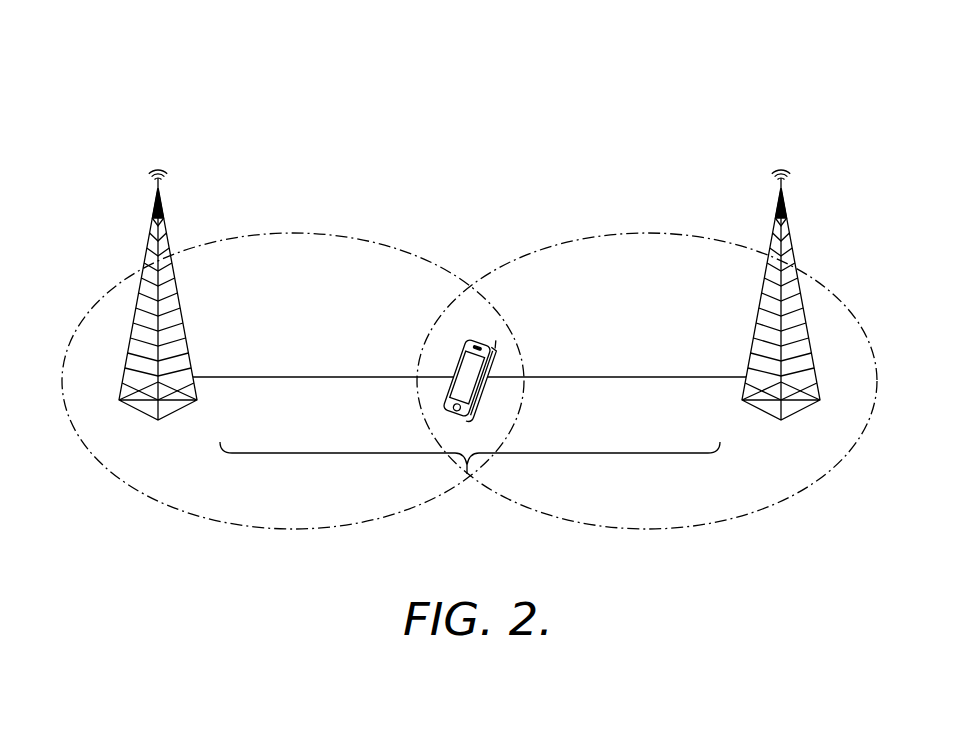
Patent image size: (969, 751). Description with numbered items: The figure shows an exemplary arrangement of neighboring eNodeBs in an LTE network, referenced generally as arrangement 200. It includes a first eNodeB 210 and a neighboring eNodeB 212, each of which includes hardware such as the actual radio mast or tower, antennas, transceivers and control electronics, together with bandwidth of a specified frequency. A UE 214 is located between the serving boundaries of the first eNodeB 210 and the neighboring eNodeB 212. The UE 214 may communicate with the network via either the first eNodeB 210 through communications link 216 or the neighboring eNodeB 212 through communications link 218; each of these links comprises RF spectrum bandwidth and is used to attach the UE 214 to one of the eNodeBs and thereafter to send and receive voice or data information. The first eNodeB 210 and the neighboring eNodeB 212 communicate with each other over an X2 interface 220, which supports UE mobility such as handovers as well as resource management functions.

The arrangement of neighboring eNodeBs 200 is at (353, 58).
The first eNodeB 210 is at (150, 232).
The neighboring eNodeB 212 is at (790, 239).
The UE 214 is at (500, 348).
The communications link 216 is at (307, 232).
The communications link 218 is at (657, 232).
The X2 interface 220 is at (467, 474).